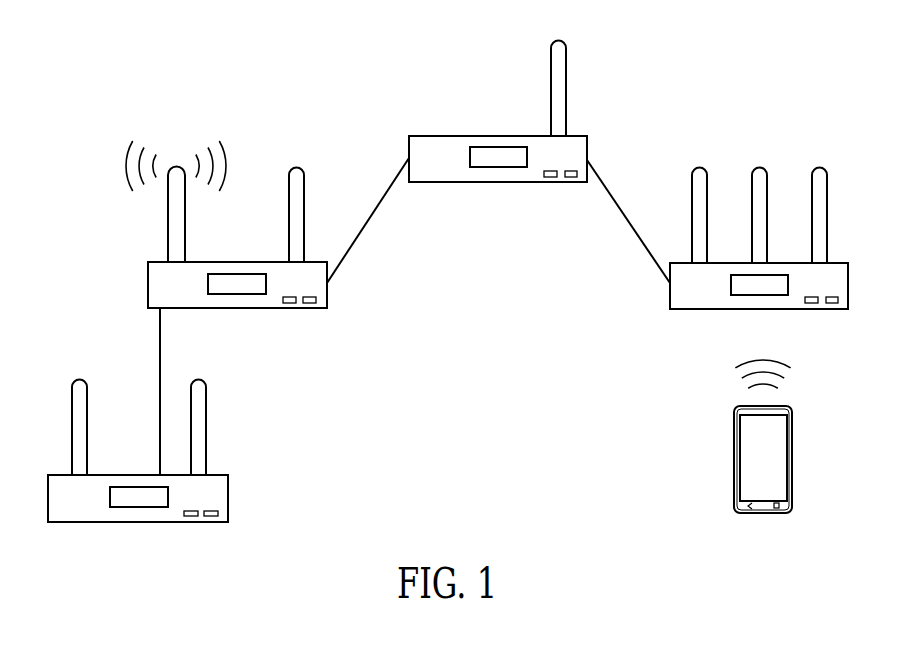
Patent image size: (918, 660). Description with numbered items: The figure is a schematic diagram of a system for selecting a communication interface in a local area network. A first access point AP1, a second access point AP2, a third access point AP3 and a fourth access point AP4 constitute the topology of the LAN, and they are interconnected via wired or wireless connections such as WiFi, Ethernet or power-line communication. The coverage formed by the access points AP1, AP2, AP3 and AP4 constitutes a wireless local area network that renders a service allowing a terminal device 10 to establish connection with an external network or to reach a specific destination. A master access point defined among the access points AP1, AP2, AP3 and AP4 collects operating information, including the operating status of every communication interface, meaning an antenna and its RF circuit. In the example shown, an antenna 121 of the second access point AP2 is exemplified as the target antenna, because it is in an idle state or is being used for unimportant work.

The first access point AP1 is at (437, 143).
The second access point AP2 is at (236, 268).
The third access point AP3 is at (683, 297).
The fourth access point AP4 is at (120, 483).
The antenna 121 is at (174, 218).
The terminal device 10 is at (783, 457).